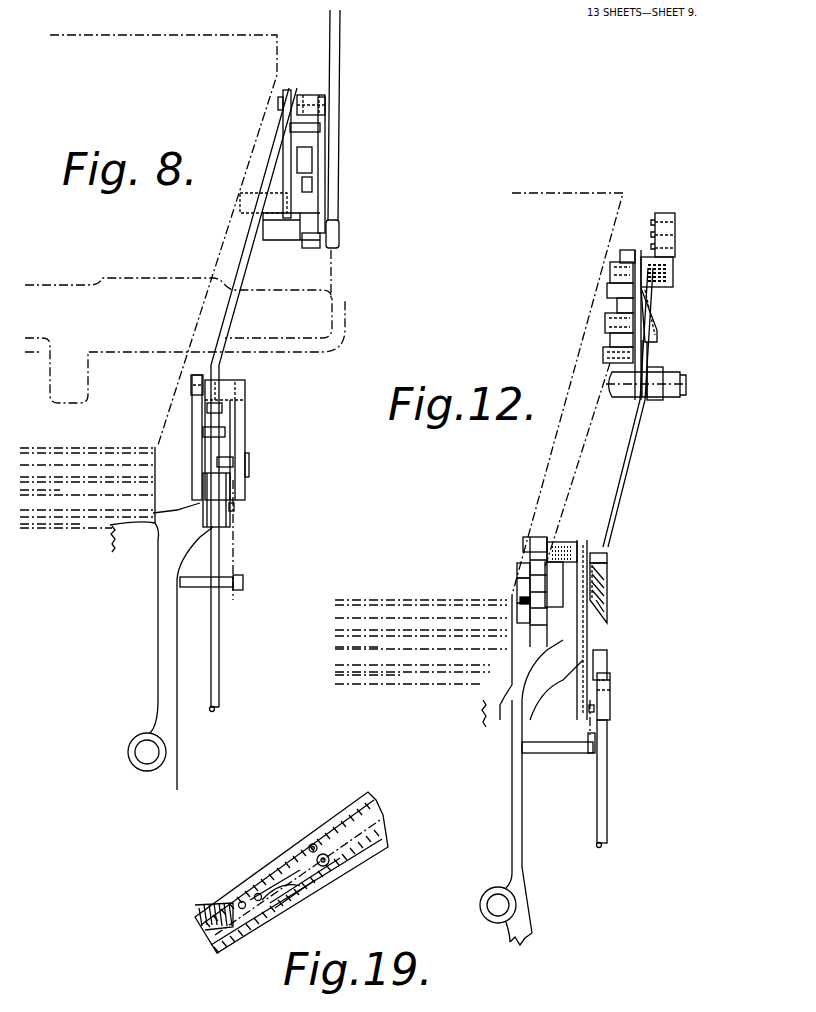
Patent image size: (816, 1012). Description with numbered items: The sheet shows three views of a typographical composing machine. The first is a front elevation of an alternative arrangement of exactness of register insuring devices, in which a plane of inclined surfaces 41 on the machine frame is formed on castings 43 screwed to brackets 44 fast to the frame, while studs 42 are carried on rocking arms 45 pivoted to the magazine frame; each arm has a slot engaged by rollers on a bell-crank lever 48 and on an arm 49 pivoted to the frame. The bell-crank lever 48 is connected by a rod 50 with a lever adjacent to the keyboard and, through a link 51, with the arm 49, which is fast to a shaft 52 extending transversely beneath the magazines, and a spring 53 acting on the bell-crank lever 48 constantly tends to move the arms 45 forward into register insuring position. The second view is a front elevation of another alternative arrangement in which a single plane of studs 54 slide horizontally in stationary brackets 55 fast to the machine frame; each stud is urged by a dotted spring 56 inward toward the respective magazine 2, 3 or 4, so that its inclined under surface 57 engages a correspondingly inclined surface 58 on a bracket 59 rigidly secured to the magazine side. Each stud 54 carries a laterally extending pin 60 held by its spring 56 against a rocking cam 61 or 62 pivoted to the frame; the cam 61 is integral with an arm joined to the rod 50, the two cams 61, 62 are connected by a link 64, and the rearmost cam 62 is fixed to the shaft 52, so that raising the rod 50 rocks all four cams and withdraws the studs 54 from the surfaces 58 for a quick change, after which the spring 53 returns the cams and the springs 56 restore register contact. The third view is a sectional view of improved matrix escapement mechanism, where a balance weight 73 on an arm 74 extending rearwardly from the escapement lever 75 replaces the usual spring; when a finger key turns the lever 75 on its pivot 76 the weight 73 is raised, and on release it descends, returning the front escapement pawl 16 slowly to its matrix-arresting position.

In FIG. 8, the magazine 2 is at (67, 525).
In FIG. 12, the magazine 2 is at (423, 673).
In FIG. 8, the magazine 3 is at (45, 490).
In FIG. 12, the magazine 3 is at (395, 647).
In FIG. 8, the magazine 4 is at (63, 460).
In FIG. 12, the magazine 4 is at (401, 612).
In FIG. 19, the front escapement pawl 16 is at (242, 902).
In FIG. 8, the inclined surfaces 41 is at (305, 132).
In FIG. 8, the studs 42 is at (307, 153).
In FIG. 8, the castings 43 is at (325, 110).
In FIG. 8, the brackets 44 is at (171, 646).
In FIG. 8, the rocking arms 45 is at (288, 137).
In FIG. 8, the bell-crank lever 48 is at (247, 397).
In FIG. 8, the arm 49 is at (318, 207).
In FIG. 12, the rod or link 50 is at (603, 787).
In FIG. 8, the link 51 is at (241, 283).
In FIG. 8, the shaft 52 is at (333, 243).
In FIG. 12, the shaft 52 is at (680, 397).
In FIG. 8, the spring 53 is at (234, 509).
In FIG. 12, the spring 53 is at (588, 707).
In FIG. 12, the studs 54 is at (643, 267).
In FIG. 12, the stationary arm or bracket 55 is at (675, 260).
In FIG. 12, the spring 56 is at (660, 293).
In FIG. 12, the inclined or wedge under surface 57 is at (632, 277).
In FIG. 12, the inclined surface 58 is at (627, 287).
In FIG. 12, the bracket 59 is at (617, 252).
In FIG. 12, the pin 60 is at (648, 300).
In FIG. 12, the rocking cam 61 is at (605, 597).
In FIG. 12, the rocking cam 62 is at (643, 290).
In FIG. 12, the link 64 is at (627, 463).
In FIG. 19, the balance weight 73 is at (348, 863).
In FIG. 19, the arm 74 is at (313, 875).
In FIG. 19, the escapement lever 75 is at (270, 905).
In FIG. 19, the pivot 76 is at (258, 893).